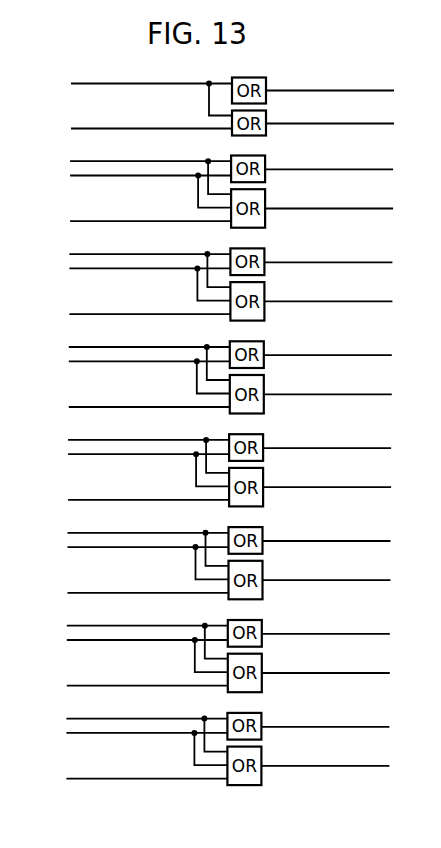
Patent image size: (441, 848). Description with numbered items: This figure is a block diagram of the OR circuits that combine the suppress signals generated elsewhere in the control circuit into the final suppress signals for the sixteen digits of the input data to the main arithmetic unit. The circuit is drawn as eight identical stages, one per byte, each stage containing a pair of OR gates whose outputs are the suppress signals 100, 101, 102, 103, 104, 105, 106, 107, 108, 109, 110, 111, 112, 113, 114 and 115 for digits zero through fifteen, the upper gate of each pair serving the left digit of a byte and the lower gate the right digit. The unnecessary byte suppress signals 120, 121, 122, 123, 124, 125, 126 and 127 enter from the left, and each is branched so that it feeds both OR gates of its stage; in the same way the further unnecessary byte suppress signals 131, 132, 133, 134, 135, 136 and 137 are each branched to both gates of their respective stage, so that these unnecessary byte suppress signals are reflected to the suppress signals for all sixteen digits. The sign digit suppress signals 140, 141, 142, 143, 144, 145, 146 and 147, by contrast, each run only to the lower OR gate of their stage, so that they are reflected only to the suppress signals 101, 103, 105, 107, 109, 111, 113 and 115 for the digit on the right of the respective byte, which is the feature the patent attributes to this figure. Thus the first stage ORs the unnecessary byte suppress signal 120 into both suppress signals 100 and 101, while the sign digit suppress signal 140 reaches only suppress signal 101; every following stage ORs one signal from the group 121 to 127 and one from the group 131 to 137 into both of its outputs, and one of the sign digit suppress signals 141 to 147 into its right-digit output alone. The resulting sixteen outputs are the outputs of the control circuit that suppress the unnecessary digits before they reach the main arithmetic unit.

The suppress signal 100 is at (348, 91).
The suppress signal 101 is at (346, 124).
The suppress signal 102 is at (347, 170).
The suppress signal 103 is at (347, 210).
The suppress signal 104 is at (346, 263).
The suppress signal 105 is at (346, 302).
The suppress signal 106 is at (346, 356).
The suppress signal 107 is at (346, 395).
The suppress signal 108 is at (345, 449).
The suppress signal 109 is at (345, 488).
The suppress signal 110 is at (342, 542).
The suppress signal 111 is at (339, 581).
The suppress signal 112 is at (341, 635).
The suppress signal 113 is at (341, 674).
The suppress signal 114 is at (340, 728).
The suppress signal 115 is at (340, 767).
The unnecessary byte suppress signal 120 is at (129, 84).
The unnecessary byte suppress signal 121 is at (128, 160).
The unnecessary byte suppress signal 122 is at (127, 253).
The unnecessary byte suppress signal 123 is at (127, 346).
The unnecessary byte suppress signal 124 is at (126, 438).
The unnecessary byte suppress signal 125 is at (126, 531).
The unnecessary byte suppress signal 126 is at (125, 624).
The unnecessary byte suppress signal 127 is at (124, 717).
The unnecessary byte suppress signal 131 is at (128, 176).
The unnecessary byte suppress signal 132 is at (127, 269).
The unnecessary byte suppress signal 133 is at (127, 362).
The unnecessary byte suppress signal 134 is at (126, 455).
The unnecessary byte suppress signal 135 is at (126, 548).
The unnecessary byte suppress signal 136 is at (125, 641).
The unnecessary byte suppress signal 137 is at (124, 734).
The sign digit suppress signal 140 is at (129, 129).
The sign digit suppress signal 141 is at (128, 222).
The sign digit suppress signal 142 is at (127, 315).
The sign digit suppress signal 143 is at (127, 408).
The sign digit suppress signal 144 is at (126, 501).
The sign digit suppress signal 145 is at (126, 594).
The sign digit suppress signal 146 is at (125, 687).
The sign digit suppress signal 147 is at (124, 779).